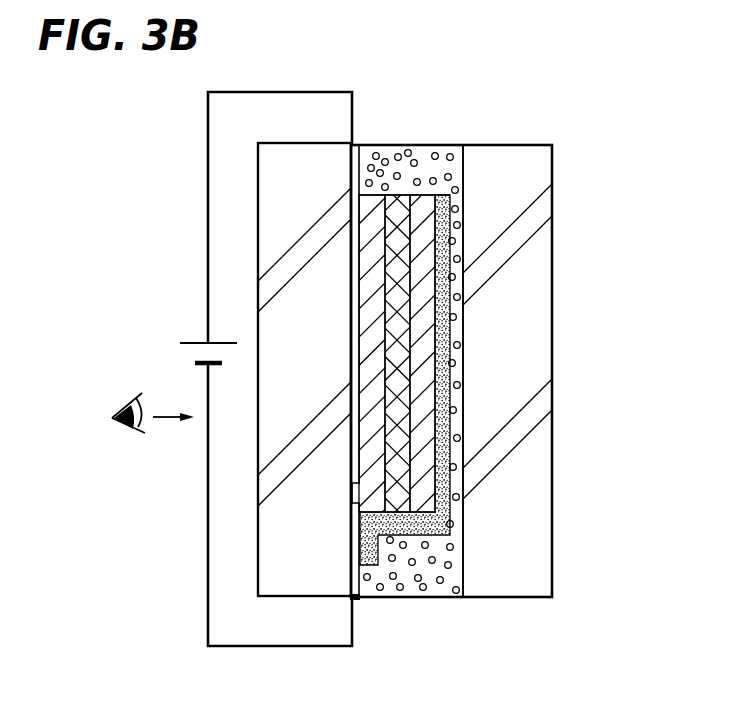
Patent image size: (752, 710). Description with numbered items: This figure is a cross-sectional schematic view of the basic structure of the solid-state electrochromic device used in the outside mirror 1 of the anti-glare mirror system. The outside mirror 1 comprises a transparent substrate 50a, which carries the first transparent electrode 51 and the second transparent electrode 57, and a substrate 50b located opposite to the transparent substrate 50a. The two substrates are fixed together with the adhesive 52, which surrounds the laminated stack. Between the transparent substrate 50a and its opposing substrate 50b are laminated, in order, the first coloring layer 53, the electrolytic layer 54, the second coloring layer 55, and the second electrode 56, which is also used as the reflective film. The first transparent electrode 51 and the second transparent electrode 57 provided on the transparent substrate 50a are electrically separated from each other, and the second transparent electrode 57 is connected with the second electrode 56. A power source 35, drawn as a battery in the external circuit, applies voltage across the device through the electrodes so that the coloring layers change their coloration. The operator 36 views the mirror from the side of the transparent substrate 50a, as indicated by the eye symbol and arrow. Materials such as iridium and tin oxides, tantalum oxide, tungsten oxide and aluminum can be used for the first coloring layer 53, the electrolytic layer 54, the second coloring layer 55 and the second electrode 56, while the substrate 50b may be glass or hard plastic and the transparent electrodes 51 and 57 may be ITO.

The outside mirror (OM) 1 is at (460, 92).
The power source 35 is at (169, 345).
The operator 36 is at (121, 440).
The transparent substrate 50a is at (297, 168).
The substrate 50b is at (533, 167).
The first transparent electrode 51 is at (355, 160).
The adhesive 52 is at (437, 157).
The first coloring layer 53 is at (376, 262).
The electrolytic layer 54 is at (403, 292).
The second coloring layer 55 is at (423, 320).
The second electrode 56 is at (440, 373).
The second transparent electrode 57 is at (358, 600).